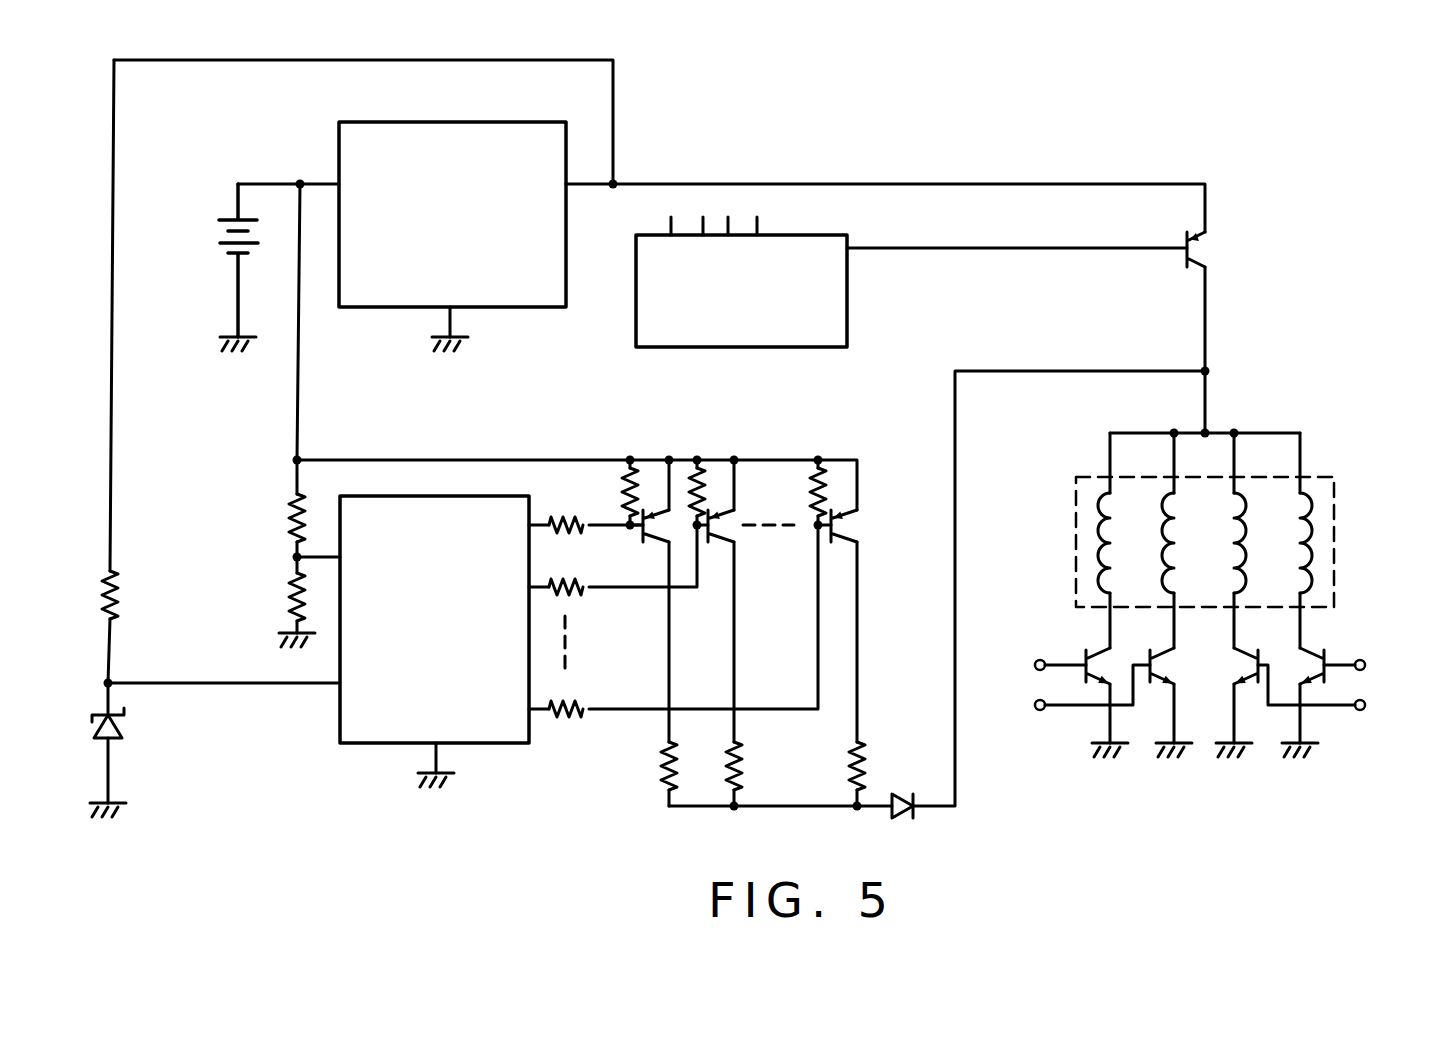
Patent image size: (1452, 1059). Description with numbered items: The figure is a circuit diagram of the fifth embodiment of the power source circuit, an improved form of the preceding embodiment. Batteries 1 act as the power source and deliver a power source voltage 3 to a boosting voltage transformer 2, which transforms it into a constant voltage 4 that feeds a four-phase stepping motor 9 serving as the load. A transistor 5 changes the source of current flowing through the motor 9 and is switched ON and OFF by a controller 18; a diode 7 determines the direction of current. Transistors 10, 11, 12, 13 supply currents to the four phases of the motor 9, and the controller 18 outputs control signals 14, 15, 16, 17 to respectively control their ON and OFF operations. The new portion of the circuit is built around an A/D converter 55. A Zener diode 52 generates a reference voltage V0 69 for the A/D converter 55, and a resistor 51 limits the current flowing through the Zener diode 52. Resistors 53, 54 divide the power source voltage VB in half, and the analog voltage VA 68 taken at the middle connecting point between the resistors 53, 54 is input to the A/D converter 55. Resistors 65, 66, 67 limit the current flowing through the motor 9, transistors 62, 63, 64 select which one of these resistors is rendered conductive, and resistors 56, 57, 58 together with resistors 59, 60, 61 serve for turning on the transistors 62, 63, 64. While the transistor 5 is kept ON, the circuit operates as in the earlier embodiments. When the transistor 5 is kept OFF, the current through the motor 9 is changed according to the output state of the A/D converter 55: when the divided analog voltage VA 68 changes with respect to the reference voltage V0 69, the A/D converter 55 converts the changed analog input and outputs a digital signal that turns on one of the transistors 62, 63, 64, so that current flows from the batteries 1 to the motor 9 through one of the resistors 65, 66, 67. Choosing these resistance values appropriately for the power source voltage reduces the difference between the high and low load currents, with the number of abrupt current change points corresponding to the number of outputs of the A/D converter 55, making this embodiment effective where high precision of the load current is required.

The batteries 1 is at (222, 232).
The boosting voltage transformer 2 is at (453, 122).
The power source voltage 3 is at (339, 184).
The constant voltage 4 is at (566, 184).
The transistor 5 is at (1195, 250).
The diode 7 is at (895, 795).
The 4-phase stepping motor 9 is at (1338, 505).
The transistor 10 is at (1108, 648).
The transistor 11 is at (1172, 653).
The transistor 12 is at (1236, 655).
The transistor 13 is at (1300, 655).
The control signal 14 is at (1035, 665).
The control signal 15 is at (1035, 705).
The control signal 16 is at (1402, 705).
The control signal 17 is at (1402, 663).
The controller 18 is at (805, 347).
The resistor 51 is at (110, 597).
The Zener diode 52 is at (124, 720).
The resistor 53 is at (297, 508).
The resistor 54 is at (297, 595).
The A/D converter 55 is at (434, 602).
The resistor 56 is at (586, 499).
The resistor 57 is at (567, 587).
The resistor 58 is at (569, 705).
The resistor 59 is at (630, 474).
The resistor 60 is at (697, 472).
The resistor 61 is at (810, 486).
The transistor 62 is at (655, 542).
The transistor 63 is at (720, 548).
The transistor 64 is at (846, 548).
The resistor 65 is at (666, 758).
The resistor 66 is at (734, 758).
The resistor 67 is at (857, 758).
The analog voltage VA 68 is at (340, 560).
The reference voltage V0 69 is at (338, 683).